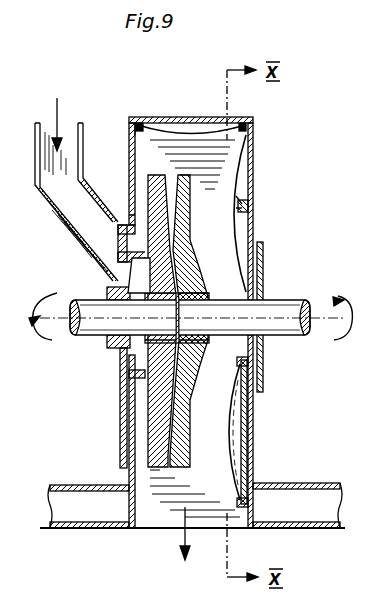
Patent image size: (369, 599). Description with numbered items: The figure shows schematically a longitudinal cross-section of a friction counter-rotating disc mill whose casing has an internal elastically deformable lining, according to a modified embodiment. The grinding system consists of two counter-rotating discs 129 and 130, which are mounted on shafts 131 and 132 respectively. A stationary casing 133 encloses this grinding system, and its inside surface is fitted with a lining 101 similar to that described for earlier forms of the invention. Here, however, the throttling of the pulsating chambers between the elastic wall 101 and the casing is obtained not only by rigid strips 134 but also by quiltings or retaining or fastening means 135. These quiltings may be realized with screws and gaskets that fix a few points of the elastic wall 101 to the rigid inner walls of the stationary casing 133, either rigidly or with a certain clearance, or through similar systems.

The lining 101 is at (188, 128).
The disc 129 is at (262, 262).
The disc 130 is at (158, 354).
The shaft 131 is at (269, 311).
The shaft 132 is at (93, 323).
The casing 133 is at (251, 473).
The rigid strips 134 is at (238, 439).
The quiltings or retaining or fastening means 135 is at (232, 199).